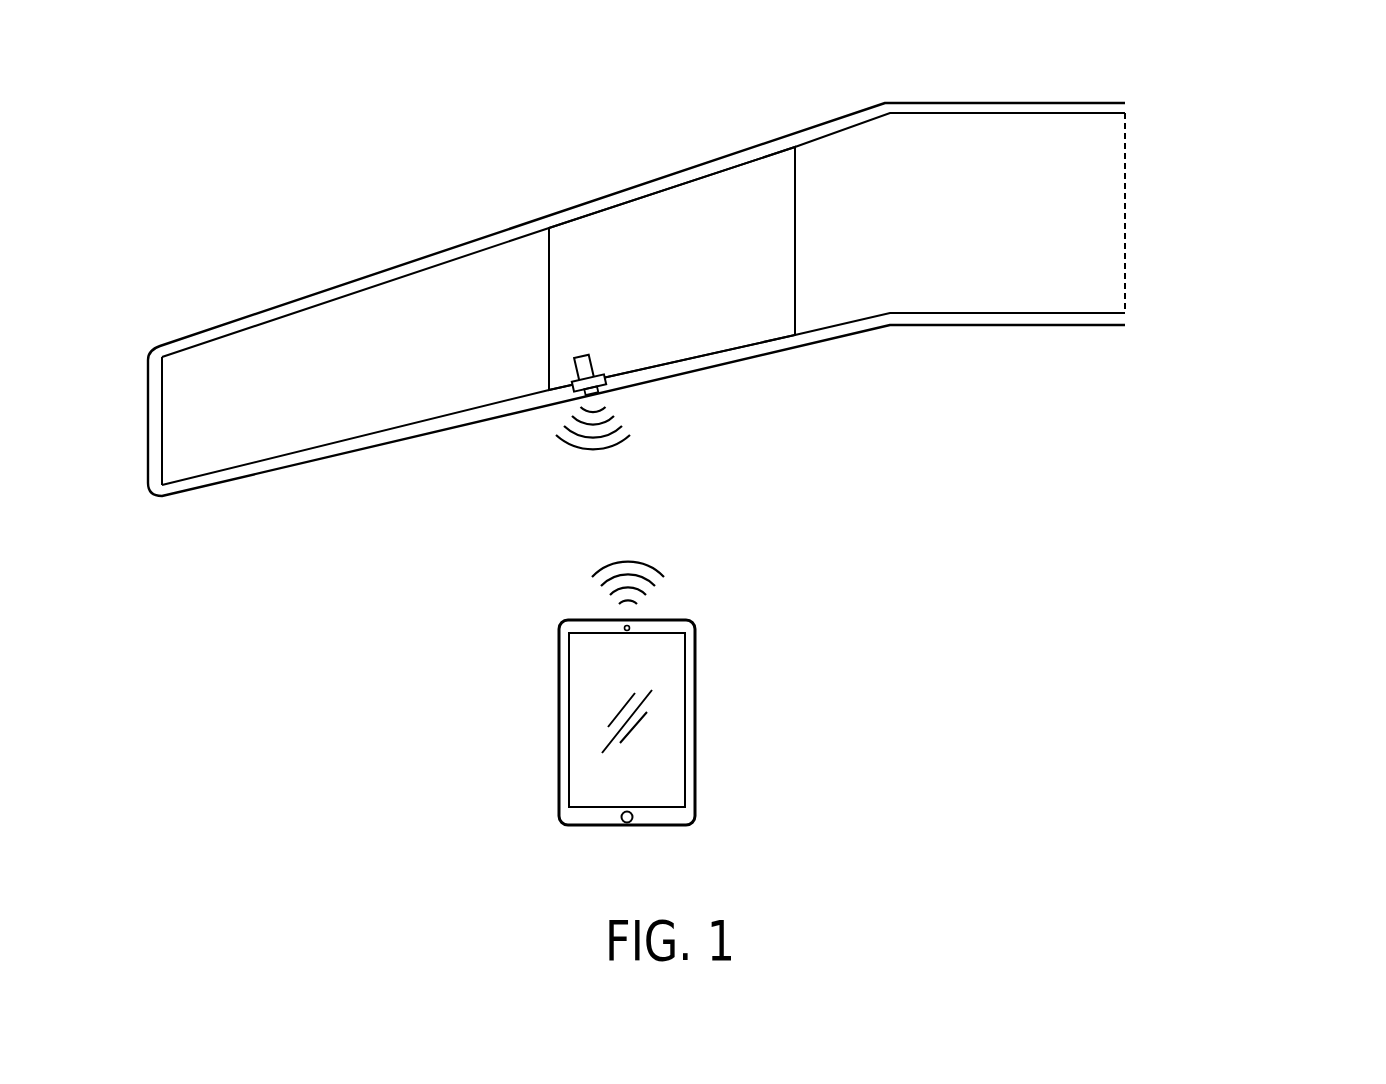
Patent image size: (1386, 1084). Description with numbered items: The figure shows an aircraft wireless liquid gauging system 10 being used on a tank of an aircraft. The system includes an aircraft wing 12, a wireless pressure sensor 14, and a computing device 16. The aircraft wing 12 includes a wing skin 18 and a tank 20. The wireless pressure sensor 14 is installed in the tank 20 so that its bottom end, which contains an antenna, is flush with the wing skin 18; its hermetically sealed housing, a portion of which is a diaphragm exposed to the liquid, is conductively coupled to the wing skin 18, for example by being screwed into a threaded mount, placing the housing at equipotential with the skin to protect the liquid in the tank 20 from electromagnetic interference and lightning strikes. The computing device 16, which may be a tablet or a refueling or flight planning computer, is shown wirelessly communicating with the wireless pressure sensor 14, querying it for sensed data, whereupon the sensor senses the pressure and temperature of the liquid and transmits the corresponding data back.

The aircraft wireless liquid gauging system 10 is at (753, 267).
The aircraft wing 12 is at (284, 243).
The wireless pressure sensor 14 is at (598, 387).
The computing device 16 is at (652, 618).
The wing skin 18 is at (1030, 102).
The tank 20 is at (672, 291).